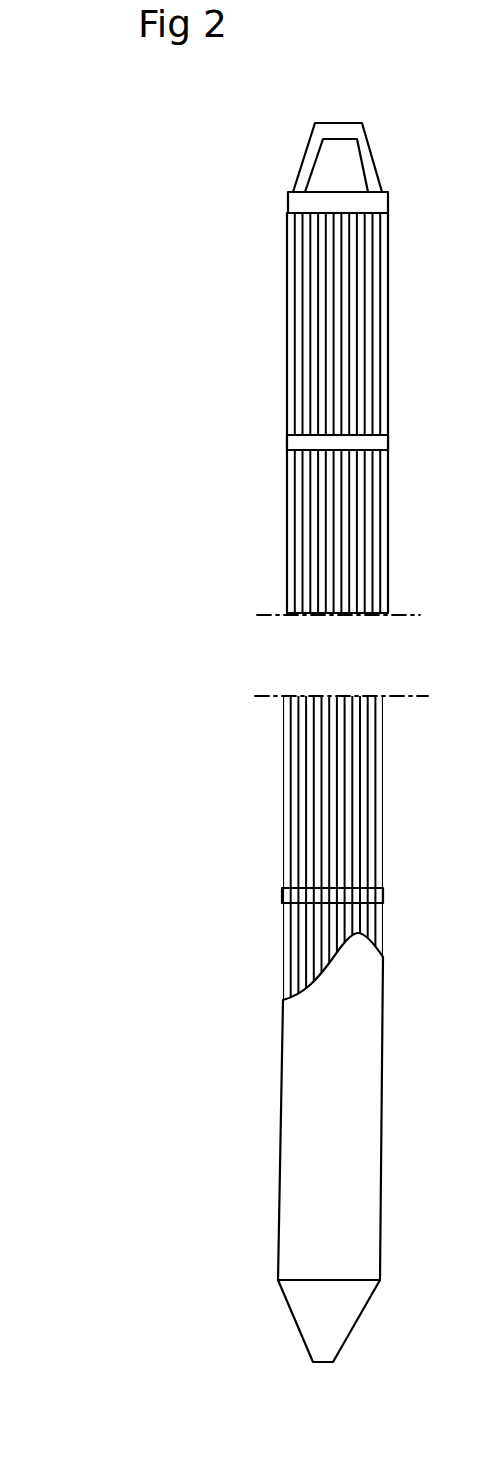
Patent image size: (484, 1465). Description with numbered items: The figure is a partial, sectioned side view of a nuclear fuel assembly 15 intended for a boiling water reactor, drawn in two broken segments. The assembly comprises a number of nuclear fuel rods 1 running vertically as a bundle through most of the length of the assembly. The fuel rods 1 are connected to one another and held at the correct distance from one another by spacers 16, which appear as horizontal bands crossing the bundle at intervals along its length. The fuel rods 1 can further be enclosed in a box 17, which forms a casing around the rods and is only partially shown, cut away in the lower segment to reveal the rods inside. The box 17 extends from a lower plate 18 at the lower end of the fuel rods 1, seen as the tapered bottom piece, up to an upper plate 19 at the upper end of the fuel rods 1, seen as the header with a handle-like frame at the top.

The nuclear fuel rod 1 is at (310, 365).
The nuclear fuel assembly 15 is at (275, 270).
The spacer 16 is at (323, 443).
The box 17 is at (310, 1048).
The lower plate 18 is at (318, 1313).
The upper plate 19 is at (317, 198).